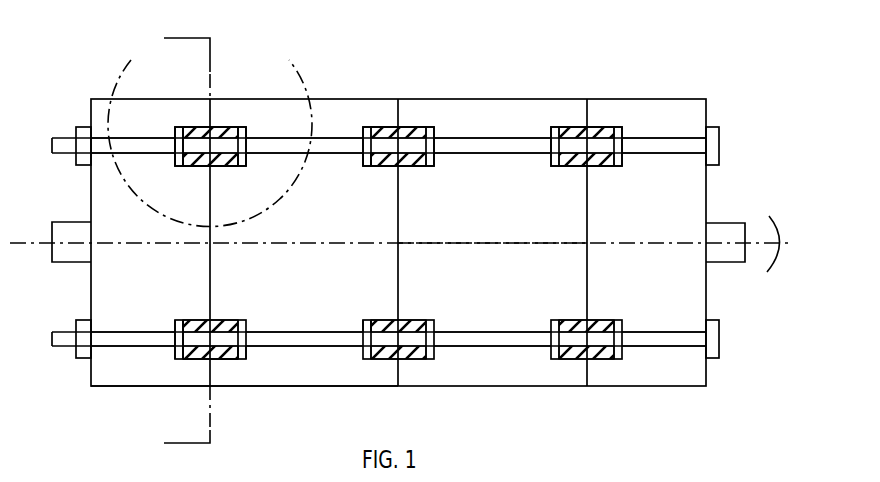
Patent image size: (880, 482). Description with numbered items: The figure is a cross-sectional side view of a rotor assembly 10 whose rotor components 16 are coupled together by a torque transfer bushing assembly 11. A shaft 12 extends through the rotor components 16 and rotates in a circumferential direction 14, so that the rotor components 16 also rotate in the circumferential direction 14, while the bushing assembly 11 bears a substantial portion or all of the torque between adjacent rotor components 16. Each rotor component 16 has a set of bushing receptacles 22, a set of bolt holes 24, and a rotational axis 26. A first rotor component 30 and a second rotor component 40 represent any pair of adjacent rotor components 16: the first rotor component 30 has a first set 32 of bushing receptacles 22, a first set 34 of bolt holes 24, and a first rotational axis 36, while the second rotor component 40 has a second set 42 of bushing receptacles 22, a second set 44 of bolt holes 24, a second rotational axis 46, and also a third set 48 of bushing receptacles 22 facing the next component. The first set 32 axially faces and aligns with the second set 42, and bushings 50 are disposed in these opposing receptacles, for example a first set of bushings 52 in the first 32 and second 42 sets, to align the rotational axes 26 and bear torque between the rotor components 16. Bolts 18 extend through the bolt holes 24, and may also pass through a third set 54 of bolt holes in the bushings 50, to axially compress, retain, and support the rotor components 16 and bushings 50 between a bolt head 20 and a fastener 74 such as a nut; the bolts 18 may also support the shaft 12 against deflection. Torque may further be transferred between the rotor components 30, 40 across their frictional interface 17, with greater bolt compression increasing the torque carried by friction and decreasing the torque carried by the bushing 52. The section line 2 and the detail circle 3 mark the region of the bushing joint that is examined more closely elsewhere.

The rotor assembly 10 is at (691, 42).
The section line 2- 2 is at (183, 242).
The detail view 3 is at (210, 131).
The torque transfer bushing assembly 11 is at (237, 117).
The shaft 12 is at (727, 223).
The circumferential direction 14 is at (767, 272).
The rotor components 16 is at (225, 112).
The frictional interface 17 is at (213, 268).
The bolts 18 is at (52, 150).
The bolt head 20 is at (722, 143).
The bushing receptacles 22 is at (363, 127).
The bolt holes 24 is at (490, 154).
The rotational axis 26 is at (490, 243).
The first rotor component 30 is at (152, 377).
The first set of bushing receptacles 32 is at (176, 163).
The first set of bolt holes 34 is at (125, 138).
The first rotational axis 36 is at (146, 243).
The second rotor component 40 is at (315, 378).
The second set of bushing receptacles 42 is at (238, 167).
The second set of bolt holes 44 is at (290, 154).
The second rotational axis 46 is at (297, 243).
The third set of bushing receptacles 48 is at (363, 164).
The bushings 50 is at (408, 167).
The first set of bushings 52 is at (214, 167).
The third set of bolt holes 54 is at (246, 135).
The fastener 74 is at (77, 131).